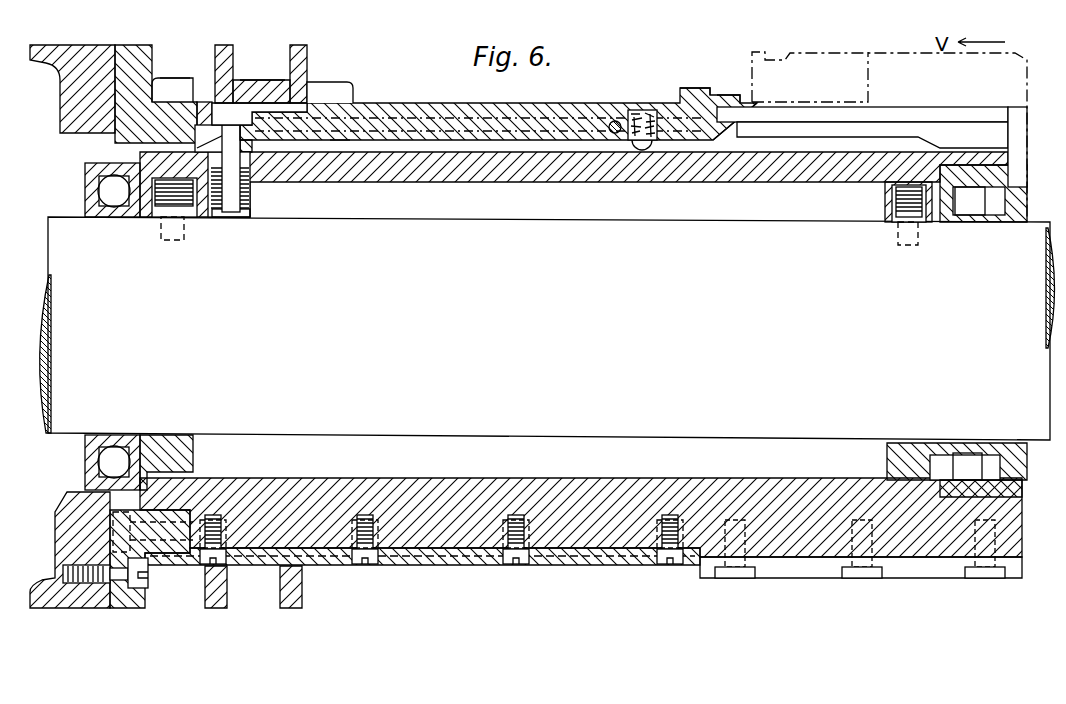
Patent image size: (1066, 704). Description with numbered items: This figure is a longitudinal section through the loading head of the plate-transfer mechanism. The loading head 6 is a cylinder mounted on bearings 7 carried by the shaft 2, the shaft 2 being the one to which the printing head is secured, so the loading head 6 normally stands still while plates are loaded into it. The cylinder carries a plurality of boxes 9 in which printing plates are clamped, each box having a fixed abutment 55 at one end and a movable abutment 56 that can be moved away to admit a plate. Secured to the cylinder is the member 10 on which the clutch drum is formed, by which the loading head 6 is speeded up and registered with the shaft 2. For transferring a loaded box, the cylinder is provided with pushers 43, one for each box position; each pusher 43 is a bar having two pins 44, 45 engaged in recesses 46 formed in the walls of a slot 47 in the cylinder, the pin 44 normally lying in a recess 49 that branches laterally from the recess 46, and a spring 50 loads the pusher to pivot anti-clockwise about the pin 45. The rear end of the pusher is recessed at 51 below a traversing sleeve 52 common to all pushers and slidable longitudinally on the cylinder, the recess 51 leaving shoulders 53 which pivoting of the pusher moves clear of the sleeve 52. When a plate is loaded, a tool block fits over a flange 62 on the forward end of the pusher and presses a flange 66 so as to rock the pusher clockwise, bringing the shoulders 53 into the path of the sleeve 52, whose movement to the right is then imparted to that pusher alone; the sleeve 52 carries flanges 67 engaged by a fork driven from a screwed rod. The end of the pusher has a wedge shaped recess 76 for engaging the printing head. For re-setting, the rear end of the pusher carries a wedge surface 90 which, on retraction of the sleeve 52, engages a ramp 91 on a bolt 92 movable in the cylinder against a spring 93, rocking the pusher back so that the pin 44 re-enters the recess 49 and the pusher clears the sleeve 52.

The shaft 2 is at (547, 328).
The loading head 6 is at (465, 173).
The bearings 7 is at (115, 200).
The boxes 9 is at (912, 97).
The member 10 is at (82, 109).
The pusher 43 is at (543, 93).
The pin 44 is at (305, 160).
The pin 45 is at (618, 120).
The recesses 46 is at (798, 130).
The slot 47 is at (822, 165).
The recess 49 is at (338, 155).
The spring 50 is at (645, 112).
The recess 51 is at (282, 92).
The traversing sleeve 52 is at (352, 88).
The shoulders 53 is at (213, 105).
The fixed abutment 55 is at (1025, 88).
The movable abutment 56 is at (865, 85).
The flange 62 is at (704, 92).
The flange 66 is at (737, 100).
The flanges 67 is at (290, 54).
The wedge shaped recess 76 is at (748, 105).
The wedge surface 90 is at (192, 102).
The ramp 91 is at (248, 163).
The bolt 92 is at (238, 195).
The spring 93 is at (203, 207).